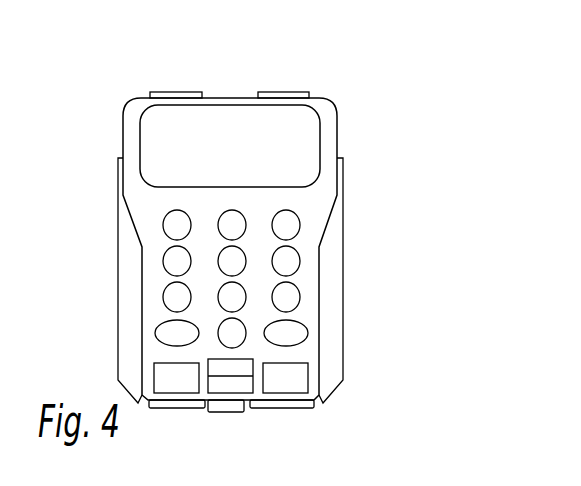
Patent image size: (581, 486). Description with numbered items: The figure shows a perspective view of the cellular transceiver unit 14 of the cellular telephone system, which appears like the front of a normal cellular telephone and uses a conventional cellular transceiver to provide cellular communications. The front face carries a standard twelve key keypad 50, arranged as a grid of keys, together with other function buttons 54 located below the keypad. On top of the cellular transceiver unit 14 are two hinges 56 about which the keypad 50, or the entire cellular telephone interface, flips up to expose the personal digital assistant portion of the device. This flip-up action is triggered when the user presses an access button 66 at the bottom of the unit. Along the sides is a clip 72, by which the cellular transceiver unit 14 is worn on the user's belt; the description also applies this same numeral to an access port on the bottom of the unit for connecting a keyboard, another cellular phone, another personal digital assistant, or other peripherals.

The cellular transceiver unit 14 is at (97, 105).
The keypad 50 is at (233, 226).
The function buttons 54 is at (285, 377).
The hinges 56 is at (177, 93).
The access button 66 is at (217, 409).
The clip 72 is at (125, 337).